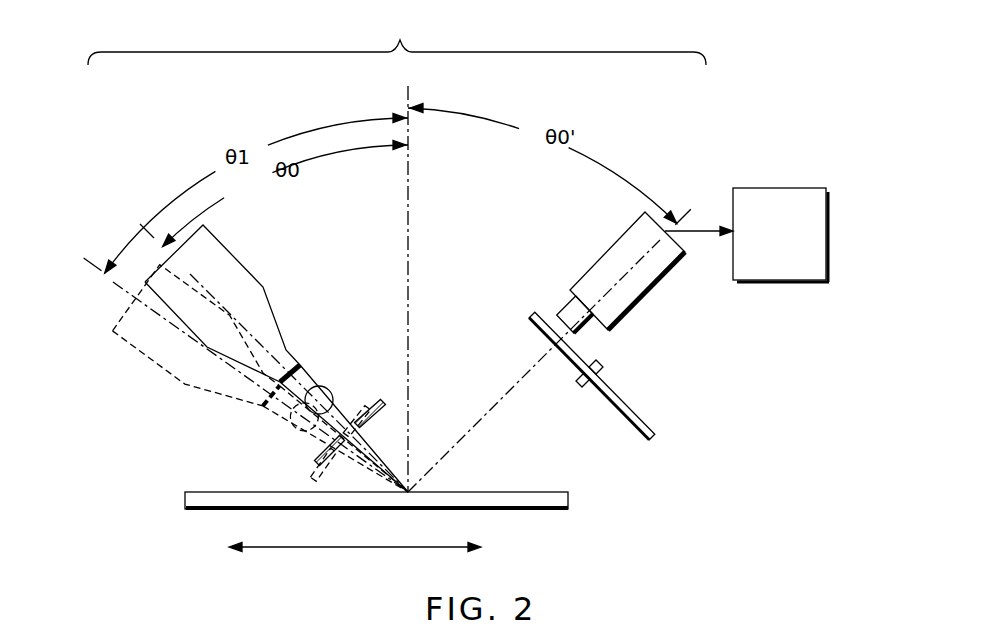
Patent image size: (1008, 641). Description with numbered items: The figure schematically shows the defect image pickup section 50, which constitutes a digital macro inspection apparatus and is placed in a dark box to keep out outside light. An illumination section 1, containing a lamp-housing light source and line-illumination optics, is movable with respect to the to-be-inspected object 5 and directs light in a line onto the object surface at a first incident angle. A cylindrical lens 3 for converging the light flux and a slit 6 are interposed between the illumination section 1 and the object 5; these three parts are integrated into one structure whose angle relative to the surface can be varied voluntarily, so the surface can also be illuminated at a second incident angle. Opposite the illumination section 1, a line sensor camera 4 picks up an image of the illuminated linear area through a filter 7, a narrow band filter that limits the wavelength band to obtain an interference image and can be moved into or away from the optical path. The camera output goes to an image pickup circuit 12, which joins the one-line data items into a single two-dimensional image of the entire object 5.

The defect image pickup section 50 is at (397, 36).
The illumination section 1 is at (240, 262).
The cylindrical lens 3 is at (326, 388).
The slit 6 is at (374, 401).
The to-be-inspected object 5 is at (570, 497).
The line sensor camera 4 is at (656, 284).
The filter 7 is at (647, 413).
The image pickup circuit 12 is at (790, 186).